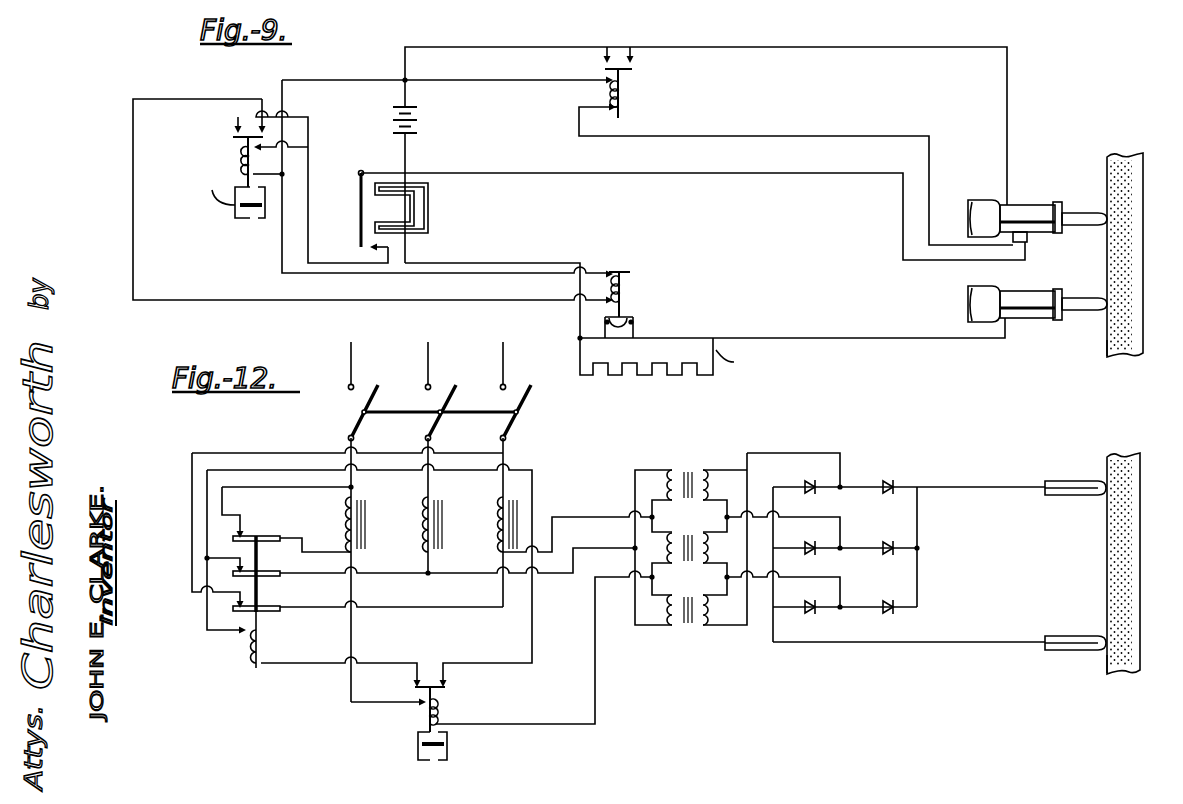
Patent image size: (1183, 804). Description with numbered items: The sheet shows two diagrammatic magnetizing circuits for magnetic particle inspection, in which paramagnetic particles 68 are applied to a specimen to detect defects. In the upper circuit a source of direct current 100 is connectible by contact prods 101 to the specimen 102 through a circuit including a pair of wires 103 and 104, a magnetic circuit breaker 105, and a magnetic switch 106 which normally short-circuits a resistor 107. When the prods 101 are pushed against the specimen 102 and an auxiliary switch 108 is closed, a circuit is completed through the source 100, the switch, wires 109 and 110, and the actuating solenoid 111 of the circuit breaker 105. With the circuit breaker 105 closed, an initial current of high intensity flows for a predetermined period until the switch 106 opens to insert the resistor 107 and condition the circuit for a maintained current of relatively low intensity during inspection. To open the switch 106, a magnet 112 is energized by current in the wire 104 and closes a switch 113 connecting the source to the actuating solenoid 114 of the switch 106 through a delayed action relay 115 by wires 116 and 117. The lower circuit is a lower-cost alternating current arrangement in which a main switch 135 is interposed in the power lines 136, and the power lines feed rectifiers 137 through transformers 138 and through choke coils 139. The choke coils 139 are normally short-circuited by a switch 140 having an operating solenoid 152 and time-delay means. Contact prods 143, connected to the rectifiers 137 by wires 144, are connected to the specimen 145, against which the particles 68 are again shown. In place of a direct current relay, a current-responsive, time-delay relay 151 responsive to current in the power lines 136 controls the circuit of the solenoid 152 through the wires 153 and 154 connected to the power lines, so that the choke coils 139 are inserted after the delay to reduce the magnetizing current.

In FIG. 9, the paramagnetic particles 68 is at (1122, 220).
In FIG. 12, the paramagnetic particles 68 is at (1118, 562).
In FIG. 9, the source of direct current 100 is at (427, 124).
In FIG. 9, the contact prods 101 is at (1030, 211).
In FIG. 9, the specimen 102 is at (1107, 346).
In FIG. 9, the wire 103 is at (1009, 130).
In FIG. 9, the wire 104 is at (872, 345).
In FIG. 9, the magnetic circuit breaker 105 is at (627, 44).
In FIG. 9, the magnetic switch 106 is at (631, 328).
In FIG. 9, the resistor 107 is at (705, 377).
In FIG. 9, the auxiliary switch 108 is at (1030, 239).
In FIG. 9, the wire 109 is at (652, 175).
In FIG. 9, the wire 110 is at (500, 84).
In FIG. 9, the actuating solenoid 111 is at (628, 93).
In FIG. 9, the magnet 112 is at (424, 214).
In FIG. 9, the switch 113 is at (386, 208).
In FIG. 9, the actuating solenoid 114 is at (629, 284).
In FIG. 9, the delayed action relay 115 is at (237, 152).
In FIG. 9, the wire 116 is at (132, 214).
In FIG. 9, the wire 117 is at (281, 256).
In FIG. 12, the main switch 135 is at (510, 428).
In FIG. 12, the power lines 136 is at (352, 365).
In FIG. 12, the rectifiers 137 is at (843, 483).
In FIG. 12, the transformers 138 is at (687, 468).
In FIG. 12, the choke coils 139 is at (354, 526).
In FIG. 12, the switch 140 is at (260, 596).
In FIG. 12, the contact prods 143 is at (1078, 497).
In FIG. 12, the wires 144 is at (987, 479).
In FIG. 12, the specimen 145 is at (1114, 670).
In FIG. 12, the current-responsive time-delay relay 151 is at (428, 682).
In FIG. 12, the solenoid 152 is at (247, 637).
In FIG. 12, the wire 153 is at (312, 666).
In FIG. 12, the wire 154 is at (536, 498).